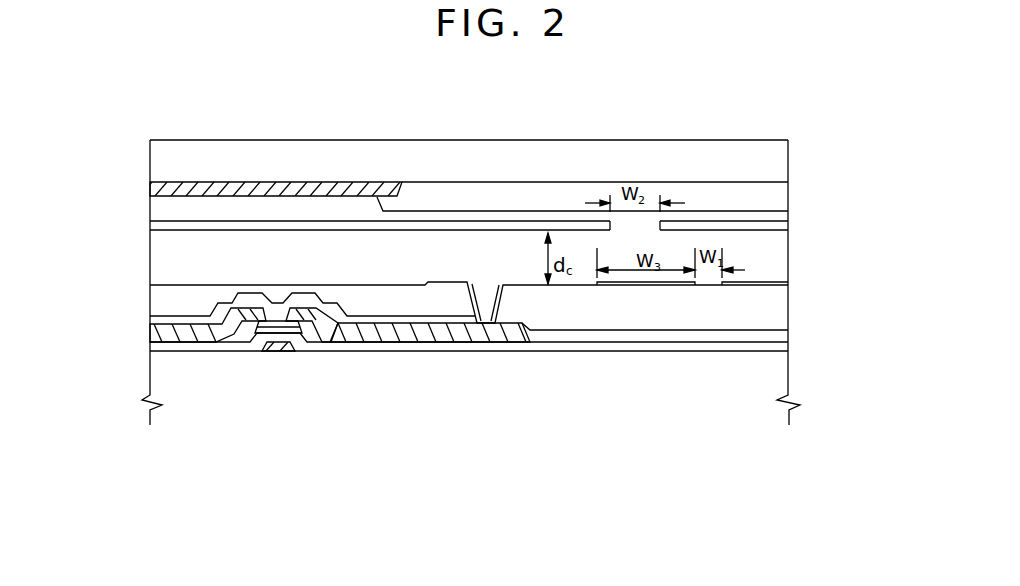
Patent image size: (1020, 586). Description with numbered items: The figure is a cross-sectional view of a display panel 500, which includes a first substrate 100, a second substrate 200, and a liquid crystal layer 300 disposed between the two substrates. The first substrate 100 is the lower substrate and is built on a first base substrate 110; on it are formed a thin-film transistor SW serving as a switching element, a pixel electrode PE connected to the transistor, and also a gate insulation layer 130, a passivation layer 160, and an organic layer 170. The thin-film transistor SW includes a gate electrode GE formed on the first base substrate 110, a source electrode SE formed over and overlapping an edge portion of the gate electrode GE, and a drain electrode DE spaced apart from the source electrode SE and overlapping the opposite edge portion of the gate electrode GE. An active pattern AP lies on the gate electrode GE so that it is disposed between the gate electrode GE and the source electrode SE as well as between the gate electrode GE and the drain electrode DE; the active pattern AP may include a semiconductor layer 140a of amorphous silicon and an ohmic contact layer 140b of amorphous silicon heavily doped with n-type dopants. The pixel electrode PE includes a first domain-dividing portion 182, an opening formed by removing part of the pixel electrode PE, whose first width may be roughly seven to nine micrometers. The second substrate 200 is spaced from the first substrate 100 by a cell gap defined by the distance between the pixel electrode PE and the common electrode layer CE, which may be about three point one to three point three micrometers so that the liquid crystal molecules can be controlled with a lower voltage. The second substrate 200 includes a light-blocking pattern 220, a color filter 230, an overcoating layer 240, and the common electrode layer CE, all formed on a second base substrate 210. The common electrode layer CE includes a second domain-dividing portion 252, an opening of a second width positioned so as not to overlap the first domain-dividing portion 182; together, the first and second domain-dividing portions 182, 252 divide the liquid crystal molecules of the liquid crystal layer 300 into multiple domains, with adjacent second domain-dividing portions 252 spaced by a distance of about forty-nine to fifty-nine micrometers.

The display panel 500 is at (481, 80).
The second substrate 200 is at (137, 142).
The liquid crystal layer 300 is at (137, 232).
The first substrate 100 is at (137, 318).
The second base substrate 210 is at (282, 160).
The light-blocking pattern 220 is at (359, 181).
The color filter 230 is at (437, 188).
The overcoating layer 240 is at (503, 216).
The common electrode layer CE is at (563, 227).
The second domain-dividing portion 252 is at (642, 226).
The organic layer 170 is at (757, 315).
The first domain-dividing portion 182 is at (704, 284).
The passivation layer 160 is at (579, 333).
The gate insulation layer 130 is at (622, 345).
The first base substrate 110 is at (668, 398).
The pixel electrode PE is at (541, 335).
The thin-film transistor SW is at (410, 503).
The source electrode SE is at (251, 330).
The gate electrode GE is at (278, 349).
The active pattern AP is at (372, 470).
The semiconductor layer 140a is at (313, 333).
The ohmic contact layer 140b is at (333, 326).
The drain electrode DE is at (350, 320).